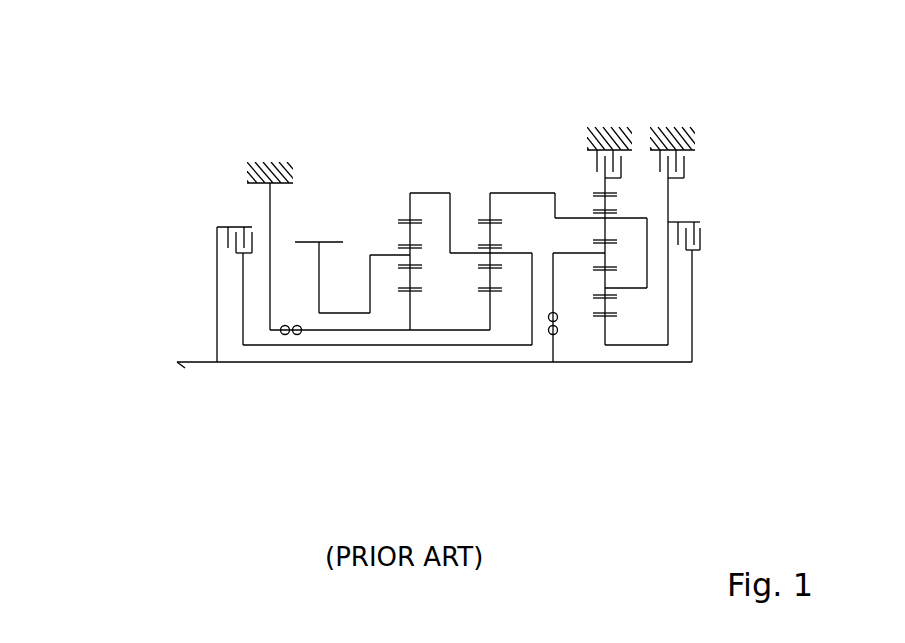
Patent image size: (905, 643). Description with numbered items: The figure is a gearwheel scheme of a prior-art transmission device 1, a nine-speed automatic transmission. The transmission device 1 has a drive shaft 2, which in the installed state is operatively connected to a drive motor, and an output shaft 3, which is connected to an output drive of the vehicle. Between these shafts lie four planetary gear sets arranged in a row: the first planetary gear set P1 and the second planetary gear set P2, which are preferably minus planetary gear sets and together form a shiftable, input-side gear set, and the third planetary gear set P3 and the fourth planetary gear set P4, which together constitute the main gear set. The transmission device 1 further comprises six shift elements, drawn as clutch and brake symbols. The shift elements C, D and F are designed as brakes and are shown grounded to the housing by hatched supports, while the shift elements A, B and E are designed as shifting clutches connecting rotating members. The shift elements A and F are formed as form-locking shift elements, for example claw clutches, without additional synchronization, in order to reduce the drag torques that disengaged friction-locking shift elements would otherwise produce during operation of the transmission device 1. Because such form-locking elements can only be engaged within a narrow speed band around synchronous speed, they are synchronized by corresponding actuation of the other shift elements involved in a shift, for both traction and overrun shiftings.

The transmission device 1 is at (227, 120).
The drive shaft 2 is at (190, 367).
The output shaft 3 is at (322, 285).
The shift element A is at (551, 337).
The shift element B is at (700, 245).
The shift element C is at (687, 163).
The shift element D is at (622, 172).
The shift element E is at (213, 232).
The shift element F is at (288, 338).
The first planetary gear set P1 is at (622, 300).
The second planetary gear set P2 is at (590, 202).
The third planetary gear set P3 is at (473, 227).
The fourth planetary gear set P4 is at (427, 267).